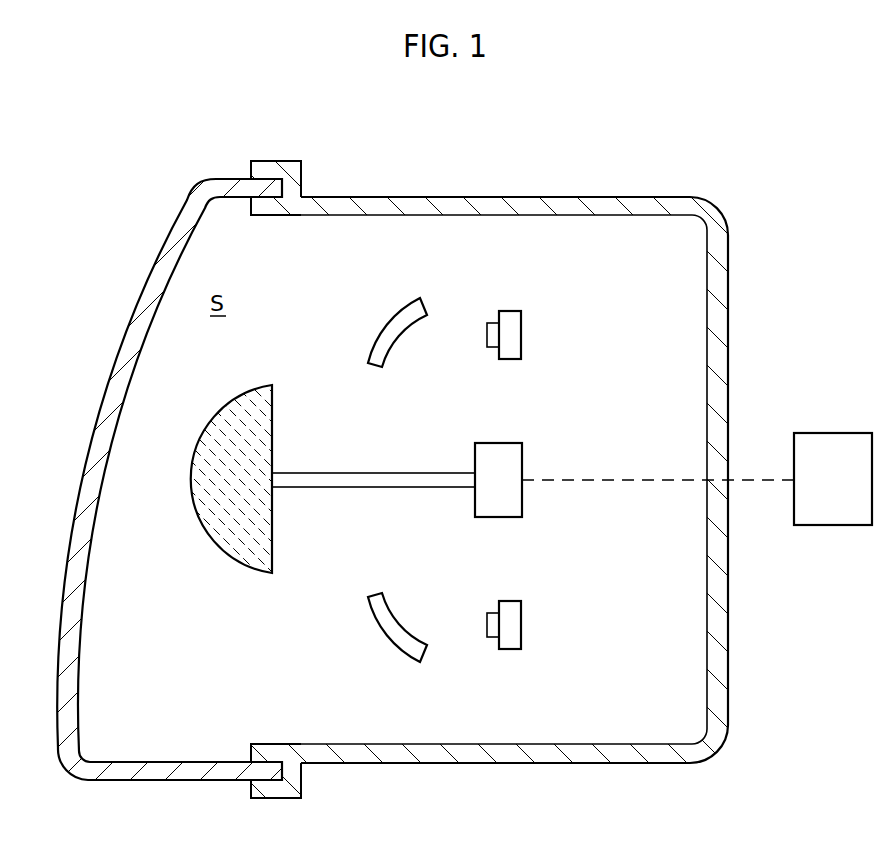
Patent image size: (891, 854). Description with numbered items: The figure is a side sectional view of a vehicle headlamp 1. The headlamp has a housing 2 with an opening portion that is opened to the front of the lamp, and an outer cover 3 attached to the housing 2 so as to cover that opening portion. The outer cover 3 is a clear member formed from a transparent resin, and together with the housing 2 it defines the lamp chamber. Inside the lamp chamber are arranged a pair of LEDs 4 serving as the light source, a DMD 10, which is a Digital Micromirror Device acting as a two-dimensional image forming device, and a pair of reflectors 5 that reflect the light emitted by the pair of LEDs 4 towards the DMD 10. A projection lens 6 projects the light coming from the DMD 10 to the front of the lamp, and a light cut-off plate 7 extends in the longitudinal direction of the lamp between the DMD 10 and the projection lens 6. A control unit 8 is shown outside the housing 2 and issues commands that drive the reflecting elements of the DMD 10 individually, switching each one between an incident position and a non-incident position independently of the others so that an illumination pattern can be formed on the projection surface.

The vehicle headlamp 1 is at (662, 168).
The housing 2 is at (724, 232).
The outer cover 3 is at (143, 292).
The LED 4 is at (516, 329).
The reflector 5 is at (407, 313).
The projection lens 6 is at (222, 550).
The light cut-off plate 7 is at (343, 481).
The control unit 8 is at (845, 440).
The DMD 10 is at (513, 491).